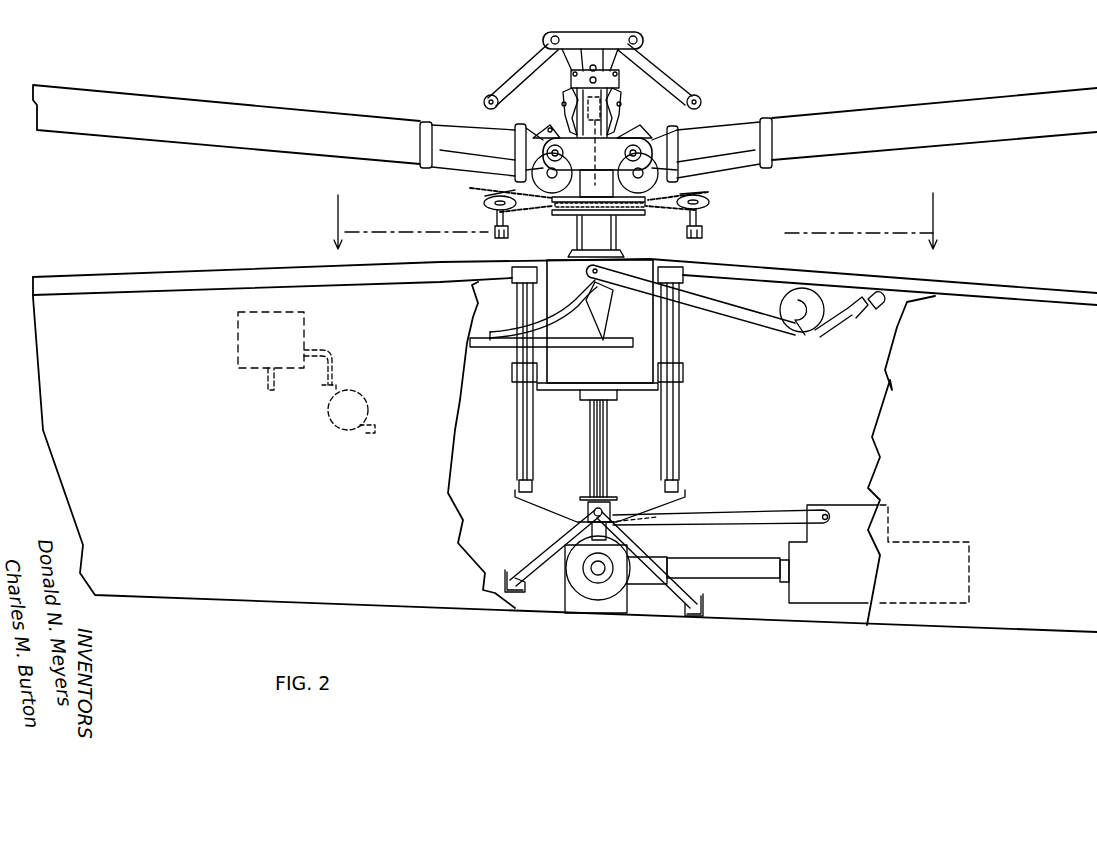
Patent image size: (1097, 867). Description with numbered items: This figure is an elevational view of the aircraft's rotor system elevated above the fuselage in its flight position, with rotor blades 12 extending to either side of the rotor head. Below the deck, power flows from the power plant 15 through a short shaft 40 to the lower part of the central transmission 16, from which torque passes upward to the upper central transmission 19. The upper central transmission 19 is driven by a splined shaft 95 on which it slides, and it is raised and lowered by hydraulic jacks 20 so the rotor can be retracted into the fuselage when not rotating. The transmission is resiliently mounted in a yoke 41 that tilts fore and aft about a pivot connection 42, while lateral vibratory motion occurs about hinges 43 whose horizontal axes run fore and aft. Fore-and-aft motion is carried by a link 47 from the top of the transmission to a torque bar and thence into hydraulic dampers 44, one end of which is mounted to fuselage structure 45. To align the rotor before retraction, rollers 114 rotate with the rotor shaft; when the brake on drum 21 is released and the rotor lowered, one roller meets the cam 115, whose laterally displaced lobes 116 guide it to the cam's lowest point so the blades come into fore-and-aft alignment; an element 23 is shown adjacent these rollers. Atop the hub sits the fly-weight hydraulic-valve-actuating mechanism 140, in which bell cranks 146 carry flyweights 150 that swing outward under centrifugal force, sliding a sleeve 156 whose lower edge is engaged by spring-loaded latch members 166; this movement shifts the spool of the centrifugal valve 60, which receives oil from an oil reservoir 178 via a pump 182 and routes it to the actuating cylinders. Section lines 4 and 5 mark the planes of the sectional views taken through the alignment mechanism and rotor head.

The rotor blade 12 is at (942, 94).
The section line 5- 5 is at (603, 163).
The section line 4- 4 is at (635, 220).
The fly-weight hydraulic-valve-actuating mechanism 140 is at (609, 34).
The bell cranks 146 is at (650, 56).
The flyweights 150 is at (484, 102).
The sleeve 156 is at (612, 72).
The latch members 166 is at (616, 94).
The centrifugal valve 60 is at (612, 106).
The rollers 114 is at (494, 223).
The drive chain 23 is at (534, 205).
The drum 21 is at (632, 214).
The hydraulic jacks 20 is at (517, 357).
The lobes 116 is at (612, 308).
The cam 115 is at (594, 333).
The upper central transmission 19 is at (636, 381).
The oil reservoir 178 is at (306, 320).
The pump 182 is at (362, 402).
The link 47 is at (758, 324).
The hydraulic dampers 44 is at (852, 323).
The fuselage structure 45 is at (889, 312).
The splined shaft 95 is at (607, 465).
The hinges 43 is at (519, 481).
The yoke 41 is at (540, 506).
The pivot connection 42 is at (583, 518).
The central transmission 16 is at (588, 575).
The short shaft 40 is at (731, 566).
The power plant 15 is at (795, 598).